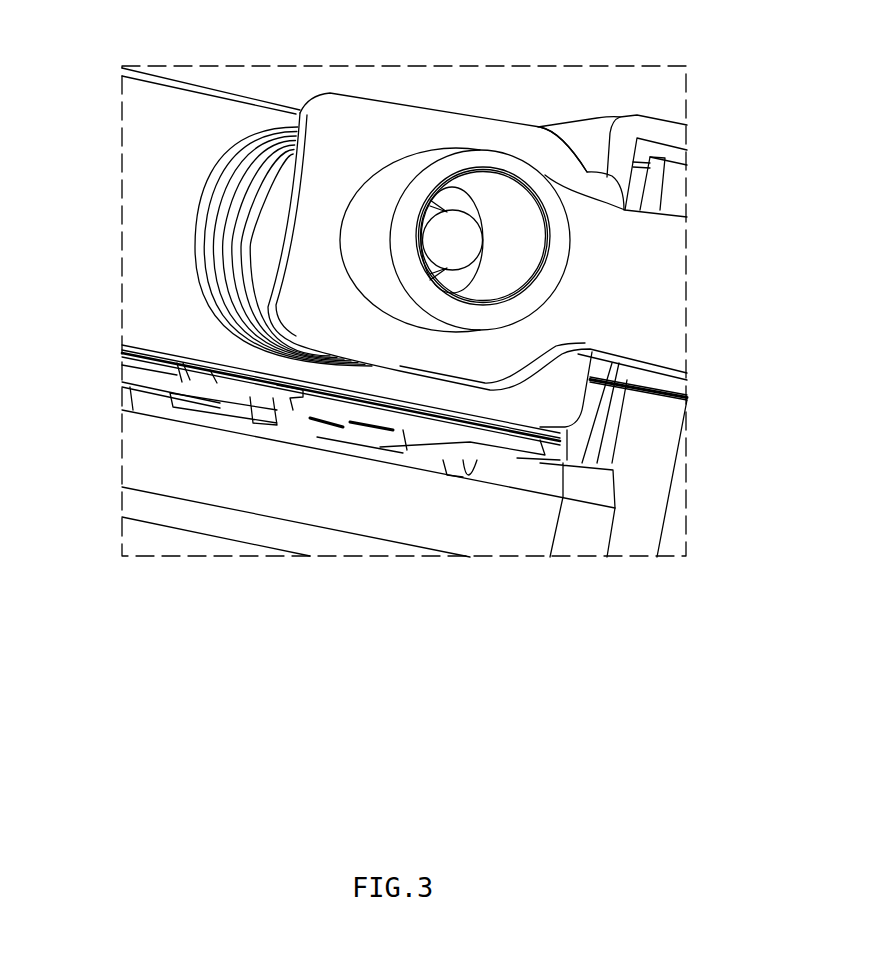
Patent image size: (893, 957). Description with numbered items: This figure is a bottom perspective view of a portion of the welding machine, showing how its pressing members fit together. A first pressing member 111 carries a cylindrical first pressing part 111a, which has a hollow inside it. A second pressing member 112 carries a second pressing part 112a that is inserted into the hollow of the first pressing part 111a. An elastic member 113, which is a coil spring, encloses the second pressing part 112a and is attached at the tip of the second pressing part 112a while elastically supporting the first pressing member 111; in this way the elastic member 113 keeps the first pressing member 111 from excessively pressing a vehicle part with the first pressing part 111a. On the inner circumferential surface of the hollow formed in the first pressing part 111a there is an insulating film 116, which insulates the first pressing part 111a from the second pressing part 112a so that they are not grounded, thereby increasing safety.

The first pressing member 111 is at (348, 127).
The first pressing part 111a is at (536, 185).
The second pressing member 112 is at (183, 110).
The second pressing part 112a is at (468, 245).
The elastic member 113 is at (207, 258).
The insulating film 116 is at (523, 235).